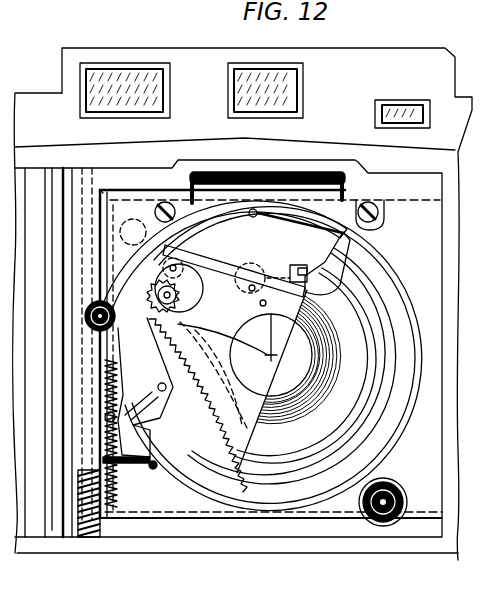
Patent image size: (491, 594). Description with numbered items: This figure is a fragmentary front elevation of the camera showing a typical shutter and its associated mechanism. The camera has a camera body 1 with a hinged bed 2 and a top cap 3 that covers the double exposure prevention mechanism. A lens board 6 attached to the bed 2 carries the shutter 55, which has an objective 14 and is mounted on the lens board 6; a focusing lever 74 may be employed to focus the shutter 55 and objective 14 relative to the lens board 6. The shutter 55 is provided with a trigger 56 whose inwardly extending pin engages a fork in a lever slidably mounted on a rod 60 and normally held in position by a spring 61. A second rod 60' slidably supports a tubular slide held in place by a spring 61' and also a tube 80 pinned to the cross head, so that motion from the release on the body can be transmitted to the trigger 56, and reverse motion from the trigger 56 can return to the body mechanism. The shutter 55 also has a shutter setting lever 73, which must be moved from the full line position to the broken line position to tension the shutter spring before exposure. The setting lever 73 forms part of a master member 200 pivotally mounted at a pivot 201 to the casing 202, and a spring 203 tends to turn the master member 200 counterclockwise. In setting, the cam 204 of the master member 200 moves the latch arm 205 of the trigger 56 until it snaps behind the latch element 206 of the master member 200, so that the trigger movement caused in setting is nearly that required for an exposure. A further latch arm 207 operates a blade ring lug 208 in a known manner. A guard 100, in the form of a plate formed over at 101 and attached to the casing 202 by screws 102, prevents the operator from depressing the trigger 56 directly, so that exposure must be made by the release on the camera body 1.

The camera body 1 is at (455, 360).
The hinged bed 2 is at (58, 527).
The top cap 3 is at (377, 58).
The lens board 6 is at (424, 408).
The objective 14 is at (272, 356).
The shutter 55 is at (413, 297).
The trigger 56 is at (127, 402).
The rod 60 is at (134, 185).
The rod 60' is at (67, 168).
The spring 61 is at (92, 380).
The spring 61' is at (70, 380).
The shutter setting lever 73 is at (85, 319).
The focusing lever 74 is at (393, 486).
The tube 80 is at (100, 184).
The guard 100 is at (128, 460).
The formed-over portion 101 is at (163, 473).
The screws 102 is at (153, 470).
The master member 200 is at (192, 284).
The pivot 201 is at (222, 263).
The casing 202 is at (252, 222).
The spring 203 is at (230, 470).
The cam 204 is at (183, 305).
The latch arm 205 is at (197, 333).
The latch element 206 is at (268, 356).
The latch arm 207 is at (243, 262).
The blade ring lug 208 is at (300, 266).